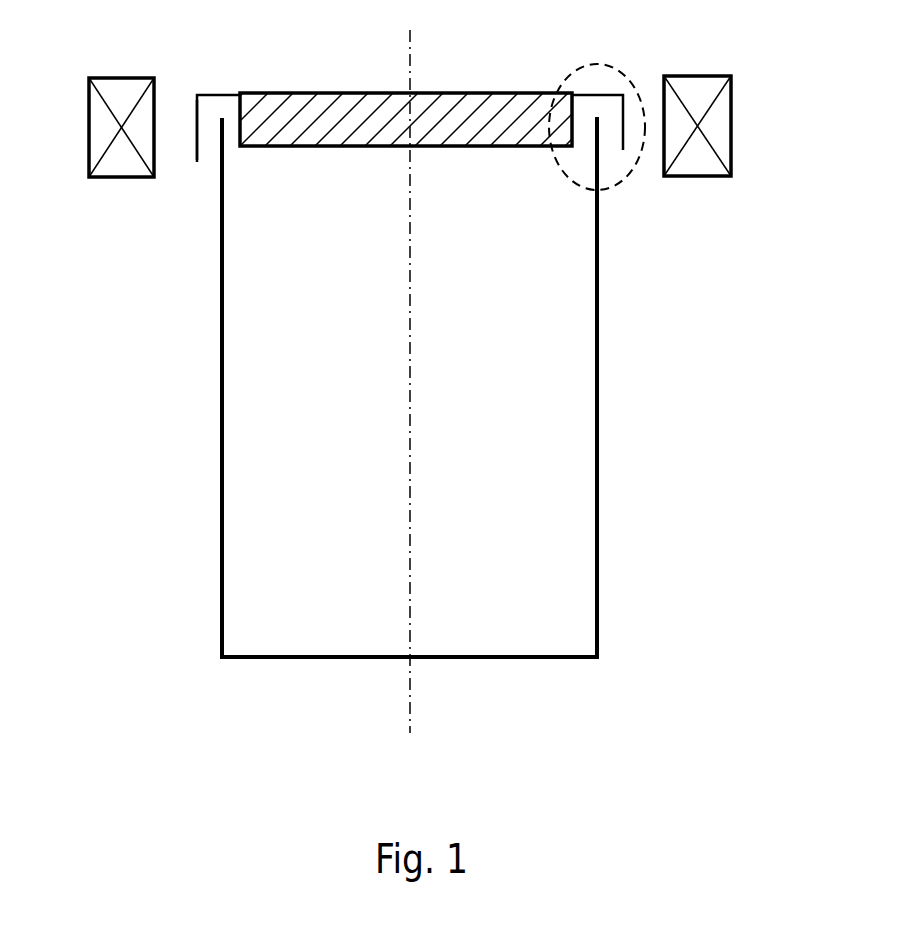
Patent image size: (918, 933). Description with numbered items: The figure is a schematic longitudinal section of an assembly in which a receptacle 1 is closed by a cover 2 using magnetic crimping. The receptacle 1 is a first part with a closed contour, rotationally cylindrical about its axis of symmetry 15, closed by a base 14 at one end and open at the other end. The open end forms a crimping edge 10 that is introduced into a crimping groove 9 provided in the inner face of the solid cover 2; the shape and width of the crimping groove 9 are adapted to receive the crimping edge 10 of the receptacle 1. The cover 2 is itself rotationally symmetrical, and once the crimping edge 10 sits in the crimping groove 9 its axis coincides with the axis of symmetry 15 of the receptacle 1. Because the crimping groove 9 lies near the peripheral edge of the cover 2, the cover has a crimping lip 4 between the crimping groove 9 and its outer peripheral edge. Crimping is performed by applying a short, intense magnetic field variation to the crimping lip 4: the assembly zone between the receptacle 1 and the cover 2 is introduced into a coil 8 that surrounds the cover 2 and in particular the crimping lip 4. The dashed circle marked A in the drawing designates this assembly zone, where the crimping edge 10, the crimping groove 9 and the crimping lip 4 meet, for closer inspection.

The receptacle 1 is at (597, 340).
The cover 2 is at (365, 93).
The crimping lip 4 is at (195, 135).
The coil 8 is at (112, 162).
The crimping groove 9 is at (213, 137).
The crimping edge 10 is at (219, 122).
The base 14 is at (473, 655).
The axis of symmetry 15 is at (410, 429).
The detail region A is at (578, 68).